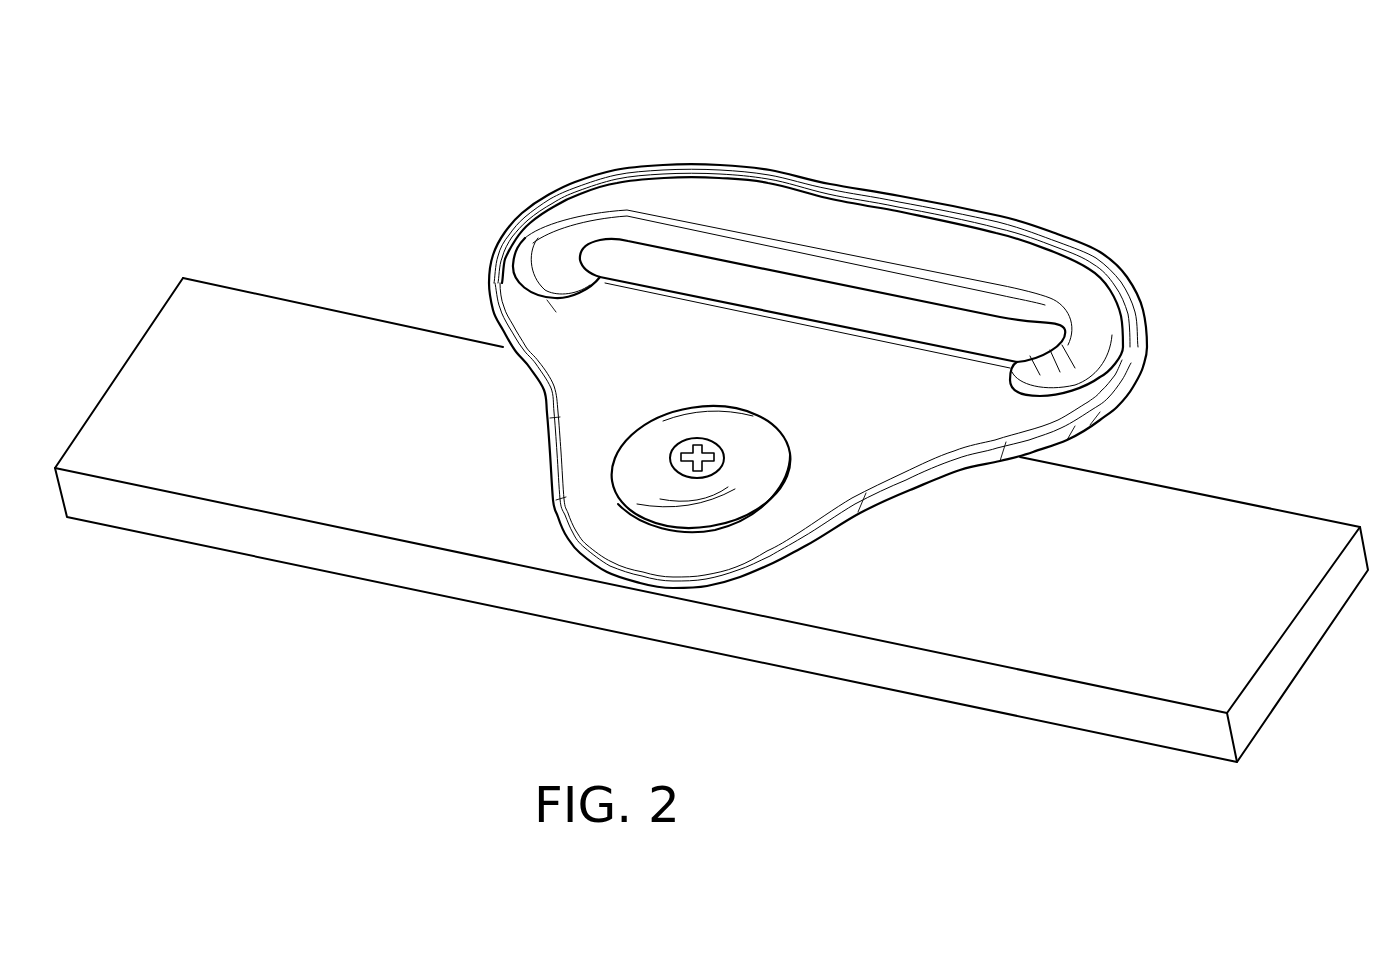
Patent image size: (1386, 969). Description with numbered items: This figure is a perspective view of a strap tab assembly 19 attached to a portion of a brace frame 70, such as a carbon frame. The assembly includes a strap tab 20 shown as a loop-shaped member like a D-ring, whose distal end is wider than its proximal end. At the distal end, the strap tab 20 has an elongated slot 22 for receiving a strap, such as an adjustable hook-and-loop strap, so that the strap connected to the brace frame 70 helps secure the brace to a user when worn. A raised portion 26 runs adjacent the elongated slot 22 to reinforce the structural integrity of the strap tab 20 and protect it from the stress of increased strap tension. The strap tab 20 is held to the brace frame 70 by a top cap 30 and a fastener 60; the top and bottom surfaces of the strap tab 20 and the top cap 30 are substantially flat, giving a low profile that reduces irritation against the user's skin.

The strap tab assembly 19 is at (922, 160).
The strap tab 20 is at (1148, 335).
The elongated slot 22 is at (982, 337).
The raised portion 26 is at (585, 208).
The top cap 30 is at (747, 483).
The fastener 60 is at (673, 450).
The brace frame 70 is at (1227, 540).